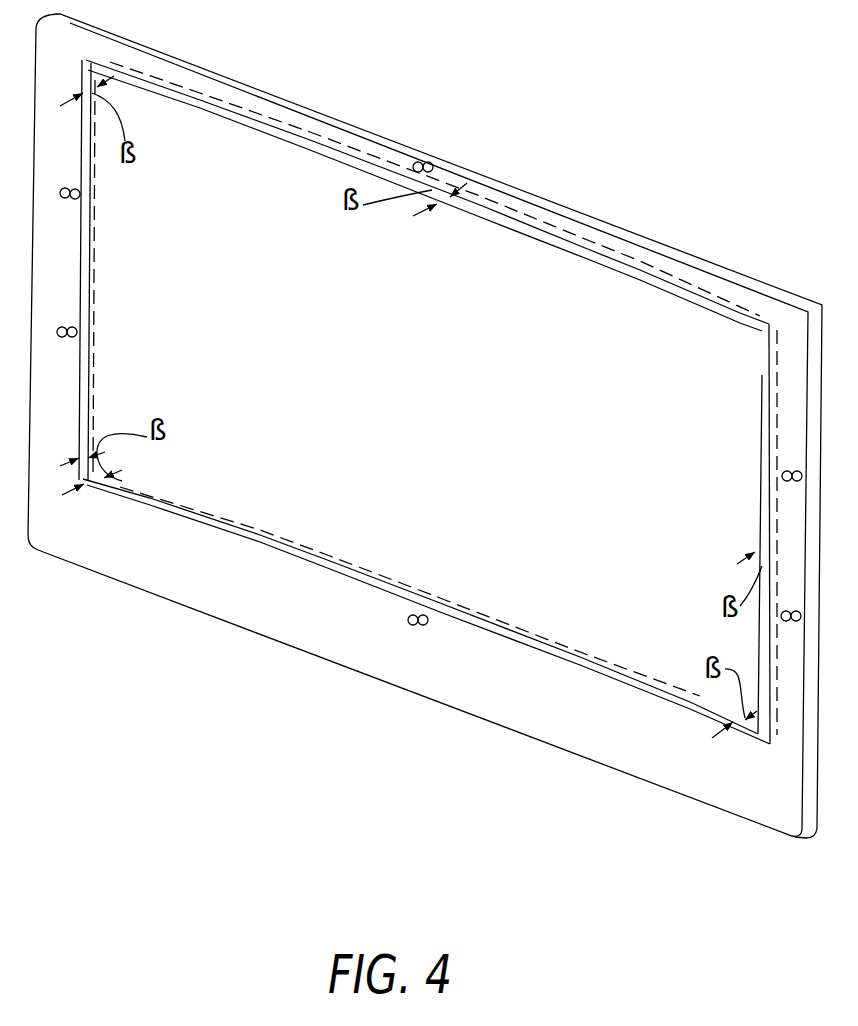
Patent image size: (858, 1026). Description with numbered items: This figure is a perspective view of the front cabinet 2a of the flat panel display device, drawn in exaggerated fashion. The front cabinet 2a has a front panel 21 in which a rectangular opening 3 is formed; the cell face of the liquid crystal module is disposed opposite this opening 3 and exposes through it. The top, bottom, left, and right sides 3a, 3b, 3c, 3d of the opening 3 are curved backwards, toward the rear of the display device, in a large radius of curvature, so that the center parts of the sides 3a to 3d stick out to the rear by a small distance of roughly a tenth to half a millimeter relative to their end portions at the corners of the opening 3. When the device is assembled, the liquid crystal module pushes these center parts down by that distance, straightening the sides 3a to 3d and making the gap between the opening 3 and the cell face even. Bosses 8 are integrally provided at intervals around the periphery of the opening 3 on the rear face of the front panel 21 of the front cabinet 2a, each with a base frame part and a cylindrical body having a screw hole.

The front panel 21 is at (641, 745).
The front cabinet 2a is at (319, 657).
The opening 3 is at (436, 402).
The top side of the opening 3a is at (509, 211).
The right side of the opening 3b is at (760, 520).
The bottom side of the opening 3c is at (350, 568).
The left side of the opening 3d is at (93, 276).
The bosses 8 is at (433, 160).